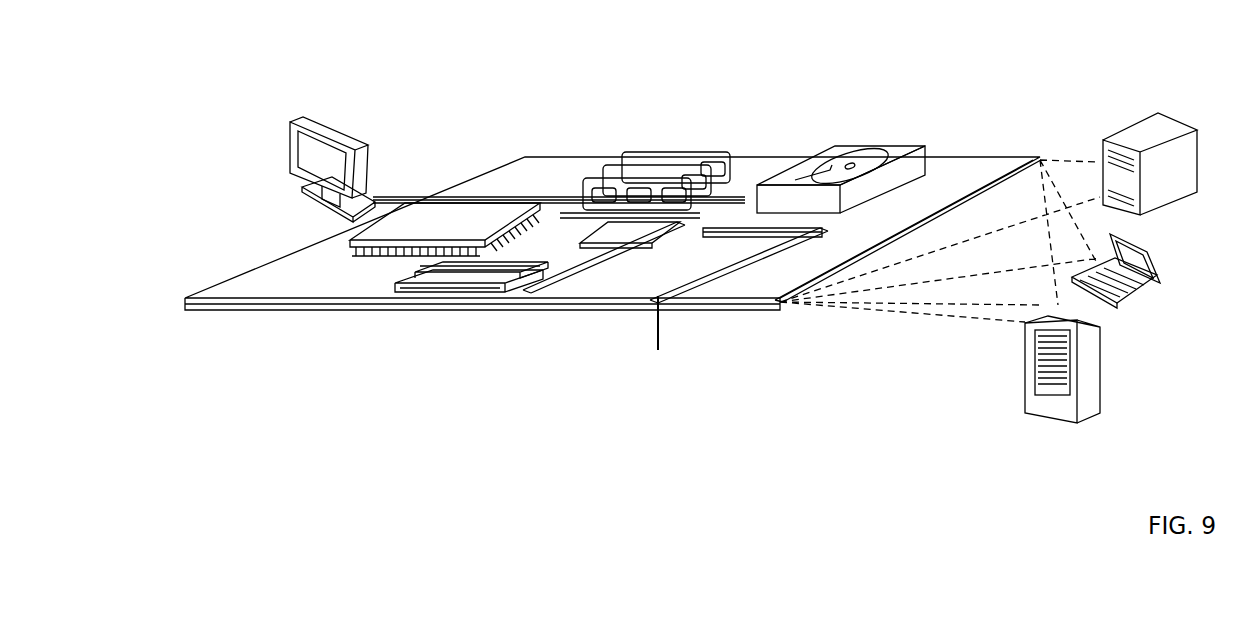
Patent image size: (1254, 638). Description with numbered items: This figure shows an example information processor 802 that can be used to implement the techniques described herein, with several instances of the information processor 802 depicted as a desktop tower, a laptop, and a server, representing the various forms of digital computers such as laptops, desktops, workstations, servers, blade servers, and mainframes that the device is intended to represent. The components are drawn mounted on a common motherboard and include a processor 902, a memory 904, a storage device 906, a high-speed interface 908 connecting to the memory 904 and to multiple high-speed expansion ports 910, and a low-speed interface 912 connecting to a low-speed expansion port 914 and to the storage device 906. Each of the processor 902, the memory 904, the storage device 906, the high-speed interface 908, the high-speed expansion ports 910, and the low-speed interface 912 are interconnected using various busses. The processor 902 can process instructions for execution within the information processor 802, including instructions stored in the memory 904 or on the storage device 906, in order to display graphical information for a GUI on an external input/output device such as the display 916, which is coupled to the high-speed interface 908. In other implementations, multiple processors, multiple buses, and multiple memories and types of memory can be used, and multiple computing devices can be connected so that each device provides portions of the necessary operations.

The information processor 802 is at (1100, 135).
The processor 902 is at (318, 240).
The memory 904 is at (641, 146).
The storage device 906 is at (828, 140).
The high-speed interface 908 is at (552, 205).
The high-speed expansion ports 910 is at (395, 280).
The low-speed interface 912 is at (753, 230).
The low-speed expansion port 914 is at (695, 303).
The display 916 is at (298, 120).